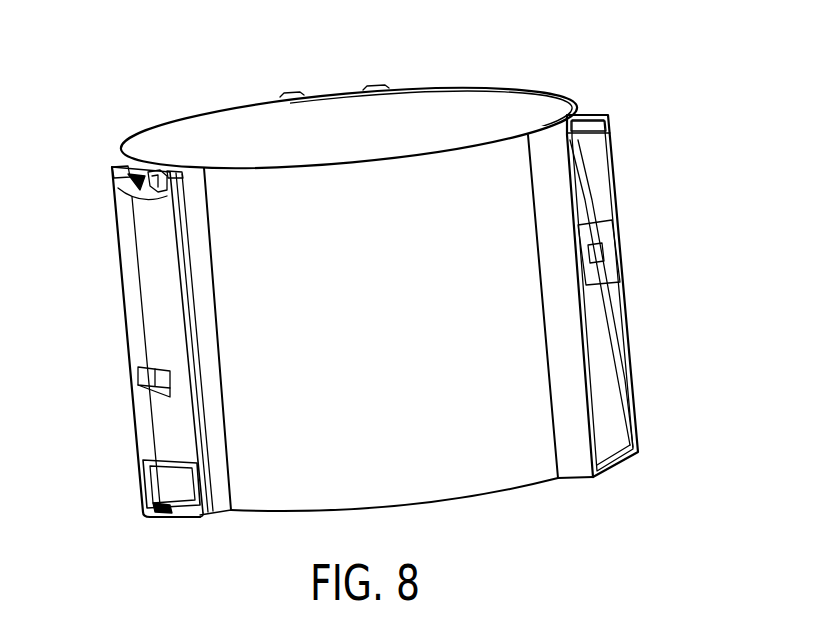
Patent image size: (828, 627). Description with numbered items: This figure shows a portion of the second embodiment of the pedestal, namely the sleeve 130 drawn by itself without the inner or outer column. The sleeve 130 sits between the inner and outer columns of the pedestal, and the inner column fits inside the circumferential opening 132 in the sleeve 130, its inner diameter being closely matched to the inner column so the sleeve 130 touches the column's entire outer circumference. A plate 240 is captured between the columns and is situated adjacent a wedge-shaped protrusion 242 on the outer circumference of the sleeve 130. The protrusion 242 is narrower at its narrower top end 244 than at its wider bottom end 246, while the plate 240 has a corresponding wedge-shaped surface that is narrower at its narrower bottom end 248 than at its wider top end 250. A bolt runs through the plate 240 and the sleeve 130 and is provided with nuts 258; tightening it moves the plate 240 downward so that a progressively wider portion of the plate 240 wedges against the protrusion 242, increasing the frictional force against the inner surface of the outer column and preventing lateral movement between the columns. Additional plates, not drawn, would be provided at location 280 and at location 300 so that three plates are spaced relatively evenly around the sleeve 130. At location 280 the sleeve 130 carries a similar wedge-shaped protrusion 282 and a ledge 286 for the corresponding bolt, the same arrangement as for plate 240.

The sleeve 130 is at (515, 480).
The circumferential opening 132 is at (440, 124).
The location 300 is at (328, 88).
The plate 240 is at (138, 302).
The wedge-shaped protrusion 242 is at (163, 480).
The narrower top end 244 is at (165, 157).
The wider bottom end 246 is at (153, 511).
The narrower bottom end 248 is at (180, 470).
The wider top end 250 is at (134, 180).
The nuts 258 is at (148, 377).
The location 280 is at (640, 311).
The wedge-shaped protrusion 282 is at (608, 422).
The ledge 286 is at (606, 253).